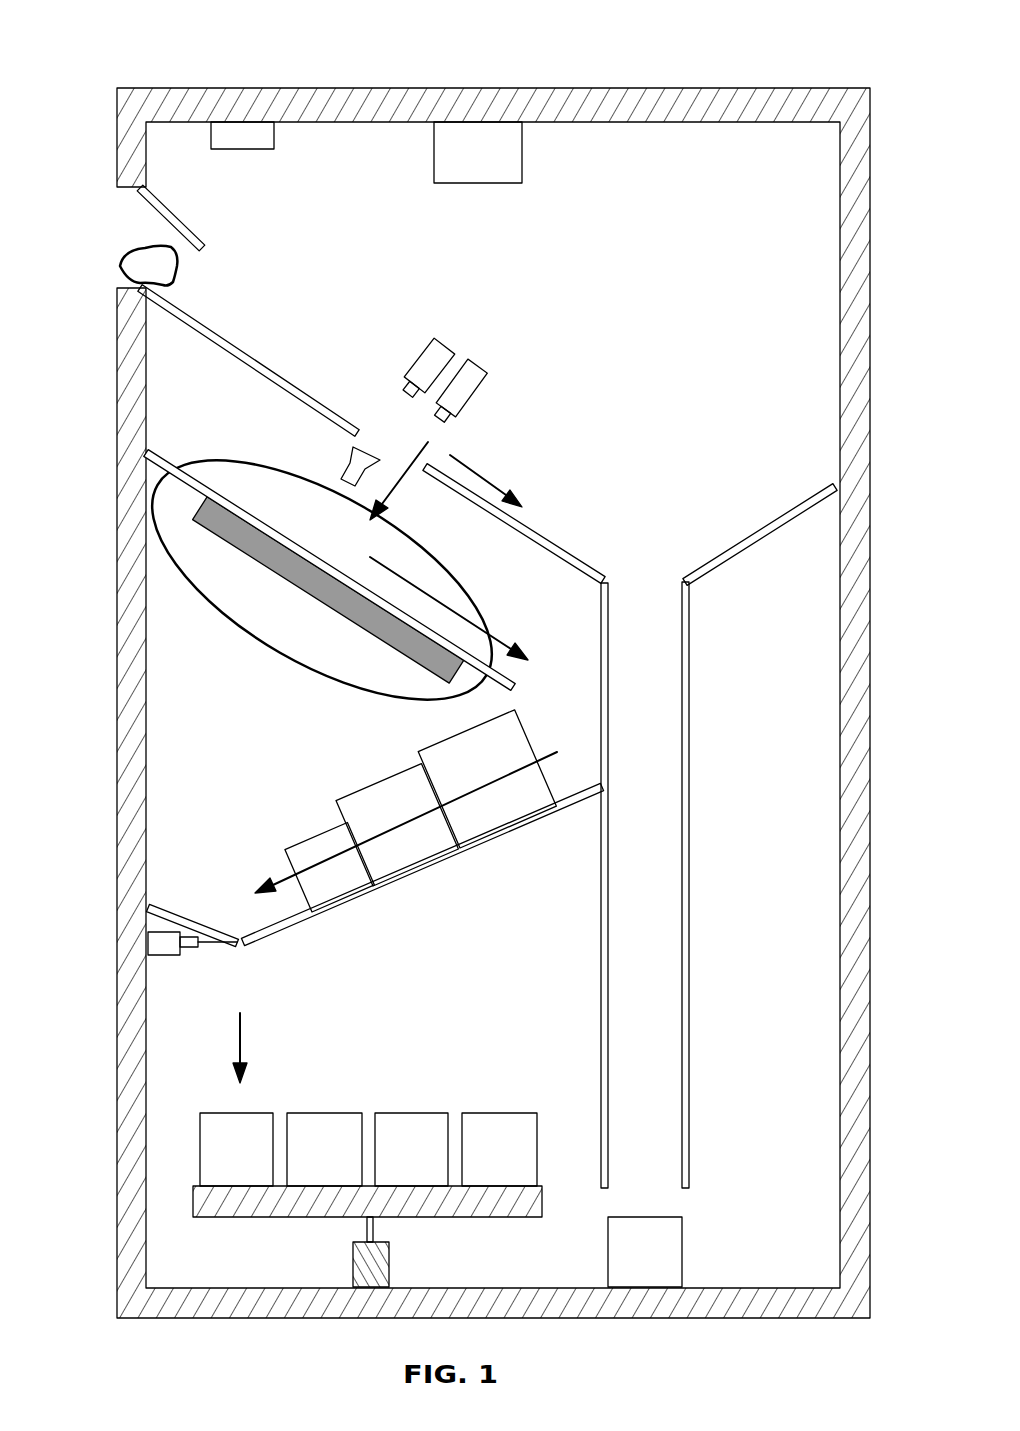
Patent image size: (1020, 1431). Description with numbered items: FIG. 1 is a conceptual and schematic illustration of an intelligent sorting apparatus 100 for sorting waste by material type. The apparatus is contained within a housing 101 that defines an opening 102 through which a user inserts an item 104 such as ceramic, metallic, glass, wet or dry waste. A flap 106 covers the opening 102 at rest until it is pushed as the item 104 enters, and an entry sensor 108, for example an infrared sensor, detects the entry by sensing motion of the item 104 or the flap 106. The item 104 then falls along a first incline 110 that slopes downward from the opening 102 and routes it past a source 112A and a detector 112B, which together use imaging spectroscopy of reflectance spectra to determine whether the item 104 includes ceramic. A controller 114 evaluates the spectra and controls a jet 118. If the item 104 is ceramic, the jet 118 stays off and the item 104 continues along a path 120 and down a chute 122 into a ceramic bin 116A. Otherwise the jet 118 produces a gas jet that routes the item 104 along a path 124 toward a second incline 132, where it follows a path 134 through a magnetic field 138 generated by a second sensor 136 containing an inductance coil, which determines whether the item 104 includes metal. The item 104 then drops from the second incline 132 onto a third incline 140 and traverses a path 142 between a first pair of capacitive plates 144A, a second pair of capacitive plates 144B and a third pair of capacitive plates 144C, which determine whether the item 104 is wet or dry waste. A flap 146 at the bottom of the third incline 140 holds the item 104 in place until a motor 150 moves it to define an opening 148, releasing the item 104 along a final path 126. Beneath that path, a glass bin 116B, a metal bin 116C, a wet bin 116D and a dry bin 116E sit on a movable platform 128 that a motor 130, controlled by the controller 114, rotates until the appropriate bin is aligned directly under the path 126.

The intelligent sorting apparatus 100 is at (878, 55).
The housing 101 is at (357, 103).
The opening 102 is at (107, 238).
The item 104 is at (165, 280).
The flap 106 is at (172, 212).
The entry sensor 108 is at (262, 148).
The first incline 110 is at (222, 343).
The source 112A is at (348, 472).
The detector 112B is at (442, 350).
The controller 114 is at (514, 165).
The ceramic bin 116A is at (675, 1222).
The glass bin 116B is at (210, 1122).
The metal bin 116C is at (302, 1122).
The wet bin 116D is at (390, 1122).
The dry bin 116E is at (482, 1122).
The jet 118 is at (470, 392).
The path 120 is at (472, 480).
The chute 122 is at (636, 556).
The path 124 is at (393, 492).
The path 126 is at (240, 1022).
The movable platform 128 is at (540, 1203).
The motor 130 is at (388, 1262).
The second incline 132 is at (230, 510).
The path 134 is at (505, 645).
The second sensor 136 is at (305, 585).
The magnetic field 138 is at (285, 648).
The third incline 140 is at (300, 920).
The path 142 is at (543, 755).
The first pair of capacitive plates 144A is at (463, 745).
The second pair of capacitive plates 144B is at (393, 787).
The third pair of capacitive plates 144C is at (315, 838).
The flap 146 is at (160, 912).
The opening 148 is at (242, 958).
The motor 150 is at (160, 952).